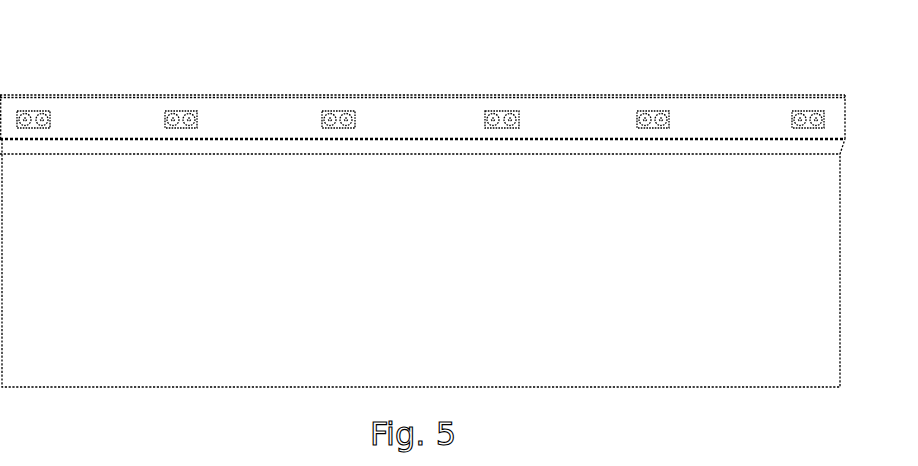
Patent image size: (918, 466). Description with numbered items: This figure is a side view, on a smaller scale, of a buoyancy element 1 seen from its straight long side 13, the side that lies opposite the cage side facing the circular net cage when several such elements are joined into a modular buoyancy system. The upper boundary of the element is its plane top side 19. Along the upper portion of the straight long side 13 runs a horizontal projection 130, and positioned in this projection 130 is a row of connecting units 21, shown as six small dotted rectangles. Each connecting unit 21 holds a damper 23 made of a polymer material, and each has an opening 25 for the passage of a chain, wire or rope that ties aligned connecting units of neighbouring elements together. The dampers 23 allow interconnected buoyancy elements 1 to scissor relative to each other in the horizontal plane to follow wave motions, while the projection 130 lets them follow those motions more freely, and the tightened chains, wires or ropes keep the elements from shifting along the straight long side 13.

The buoyancy element 1 is at (259, 86).
The straight long side 13 is at (113, 120).
The plane top side 19 is at (622, 96).
The connecting unit 21 is at (181, 112).
The damper 23 is at (350, 118).
The opening 25 is at (510, 118).
The projection 130 is at (745, 115).